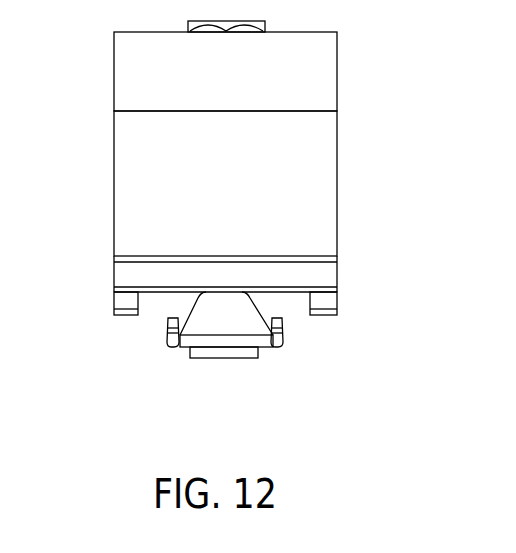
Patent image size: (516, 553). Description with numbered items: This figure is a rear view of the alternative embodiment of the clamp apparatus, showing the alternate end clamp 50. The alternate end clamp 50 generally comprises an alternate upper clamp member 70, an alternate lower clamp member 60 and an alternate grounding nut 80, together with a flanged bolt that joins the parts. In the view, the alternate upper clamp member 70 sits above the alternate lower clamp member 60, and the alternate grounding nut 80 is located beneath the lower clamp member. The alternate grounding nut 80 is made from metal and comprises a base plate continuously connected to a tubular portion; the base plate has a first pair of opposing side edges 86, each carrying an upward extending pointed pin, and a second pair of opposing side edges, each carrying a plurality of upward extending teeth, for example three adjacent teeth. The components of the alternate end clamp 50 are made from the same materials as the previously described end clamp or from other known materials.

The alternate end clamp 50 is at (101, 372).
The alternate lower clamp member 60 is at (345, 213).
The alternate upper clamp member 70 is at (345, 73).
The alternate grounding nut 80 is at (278, 353).
The first pair of opposing side edges 86 is at (222, 340).